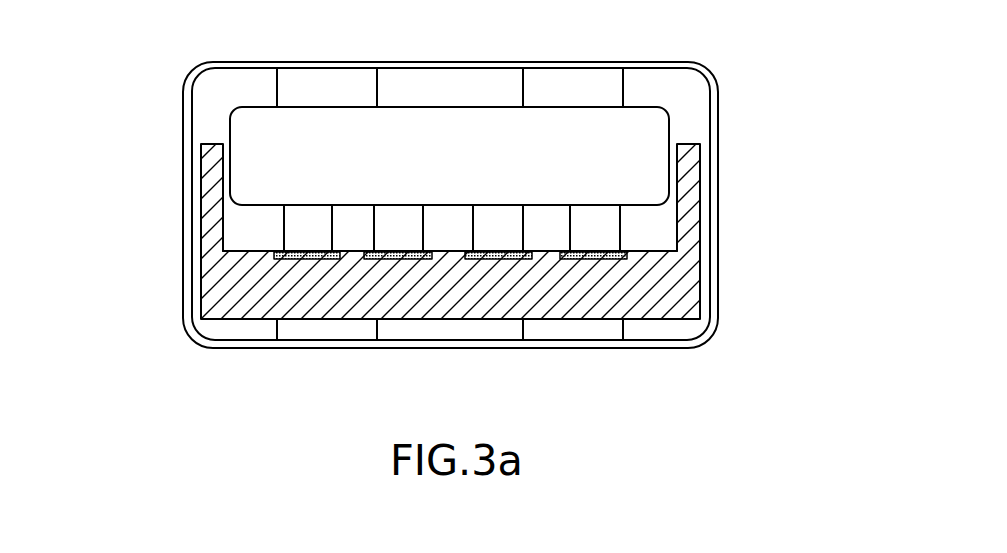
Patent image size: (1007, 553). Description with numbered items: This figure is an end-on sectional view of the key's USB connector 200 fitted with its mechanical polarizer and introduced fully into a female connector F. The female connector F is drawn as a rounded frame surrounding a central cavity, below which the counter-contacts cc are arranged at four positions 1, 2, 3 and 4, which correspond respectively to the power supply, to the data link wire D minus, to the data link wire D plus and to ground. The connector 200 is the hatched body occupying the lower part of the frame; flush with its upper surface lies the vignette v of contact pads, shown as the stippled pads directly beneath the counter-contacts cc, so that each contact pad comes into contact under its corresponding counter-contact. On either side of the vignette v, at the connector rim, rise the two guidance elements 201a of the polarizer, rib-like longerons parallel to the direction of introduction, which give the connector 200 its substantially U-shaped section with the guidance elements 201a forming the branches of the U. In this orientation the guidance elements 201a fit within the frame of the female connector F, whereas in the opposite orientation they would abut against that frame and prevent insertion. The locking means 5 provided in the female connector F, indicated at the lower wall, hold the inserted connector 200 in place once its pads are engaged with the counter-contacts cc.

The female connector F is at (718, 97).
The guidance elements 201a is at (213, 173).
The connector 200 is at (700, 290).
The locking means 5 is at (322, 332).
The counter-contacts cc is at (297, 233).
The counter-contact position for power supply 1 is at (308, 228).
The counter-contact position for data link wire D− 2 is at (398, 228).
The counter-contact position for data link wire D+ 3 is at (498, 228).
The counter-contact position for ground 4 is at (595, 228).
The vignette v is at (272, 254).